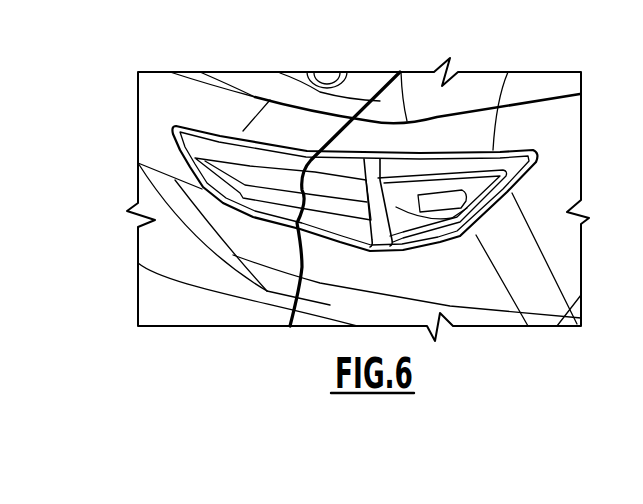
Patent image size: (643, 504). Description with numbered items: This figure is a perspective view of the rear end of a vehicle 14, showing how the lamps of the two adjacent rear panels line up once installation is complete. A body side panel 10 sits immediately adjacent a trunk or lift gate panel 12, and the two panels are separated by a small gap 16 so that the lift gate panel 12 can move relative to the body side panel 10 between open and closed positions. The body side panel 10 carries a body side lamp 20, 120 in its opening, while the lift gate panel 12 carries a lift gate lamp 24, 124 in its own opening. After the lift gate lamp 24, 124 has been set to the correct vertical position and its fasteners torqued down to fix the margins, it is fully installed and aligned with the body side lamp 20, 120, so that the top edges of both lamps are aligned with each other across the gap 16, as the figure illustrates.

The body side panel 10 is at (555, 119).
The lift gate panel 12 is at (153, 100).
The vehicle 14 is at (115, 147).
The gap 16 is at (401, 71).
The body side lamp 20 is at (465, 205).
The body side lamp 120 is at (466, 274).
The lift gate lamp 24 is at (253, 177).
The lift gate lamp 124 is at (283, 120).